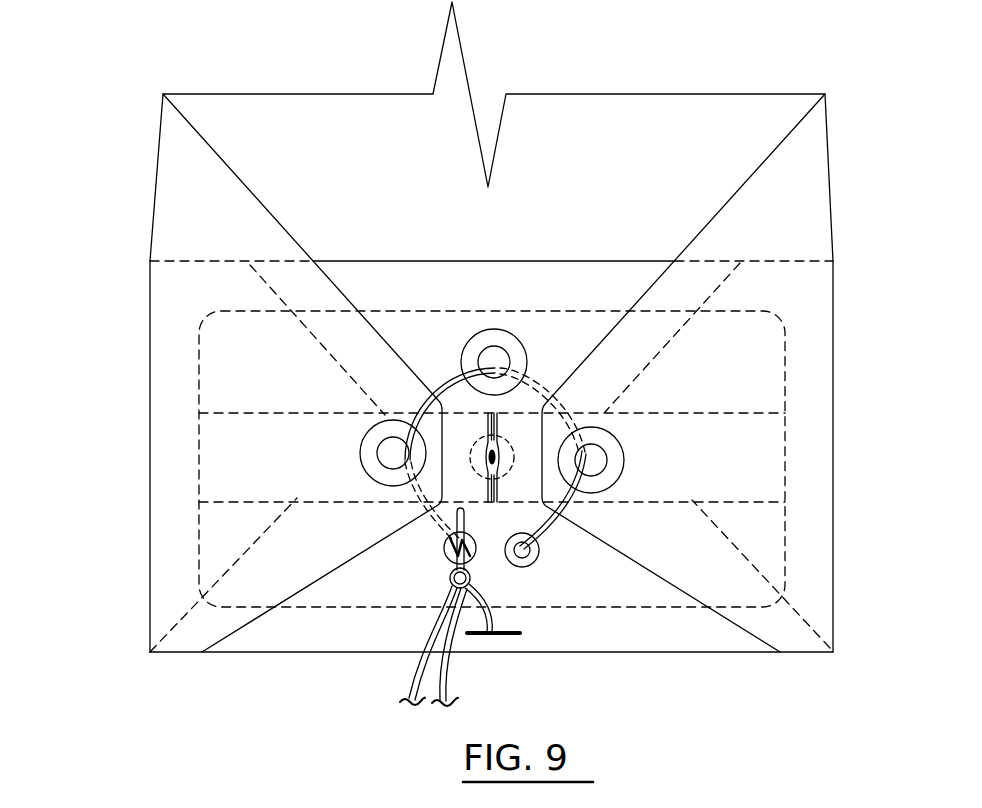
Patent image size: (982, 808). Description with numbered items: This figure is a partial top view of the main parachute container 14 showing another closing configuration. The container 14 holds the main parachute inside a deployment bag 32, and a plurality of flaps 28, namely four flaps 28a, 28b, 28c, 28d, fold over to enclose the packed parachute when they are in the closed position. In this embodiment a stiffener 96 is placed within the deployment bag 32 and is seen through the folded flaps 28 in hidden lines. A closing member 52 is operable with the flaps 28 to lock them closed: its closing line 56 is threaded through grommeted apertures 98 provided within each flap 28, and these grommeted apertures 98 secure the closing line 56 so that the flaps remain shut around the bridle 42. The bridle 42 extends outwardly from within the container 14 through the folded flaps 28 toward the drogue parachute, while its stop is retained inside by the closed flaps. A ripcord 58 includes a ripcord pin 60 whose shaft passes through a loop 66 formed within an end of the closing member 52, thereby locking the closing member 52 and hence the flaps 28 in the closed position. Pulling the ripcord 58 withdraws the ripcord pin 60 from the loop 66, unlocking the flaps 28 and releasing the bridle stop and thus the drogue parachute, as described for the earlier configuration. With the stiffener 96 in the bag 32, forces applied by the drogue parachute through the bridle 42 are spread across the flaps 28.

The parachute container 14 is at (838, 287).
The flaps 28 is at (210, 477).
The flap 28a is at (335, 359).
The flap 28b is at (505, 301).
The flap 28c is at (715, 460).
The flap 28d is at (418, 585).
The deployment bag 32 is at (683, 633).
The bridle 42 is at (497, 437).
The closing member 52 is at (438, 362).
The line 56 is at (433, 407).
The ripcord 58 is at (402, 634).
The ripcord pin 60 is at (478, 577).
The loop 66 is at (465, 543).
The stiffener 96 is at (788, 452).
The grommeted apertures 98 is at (613, 447).